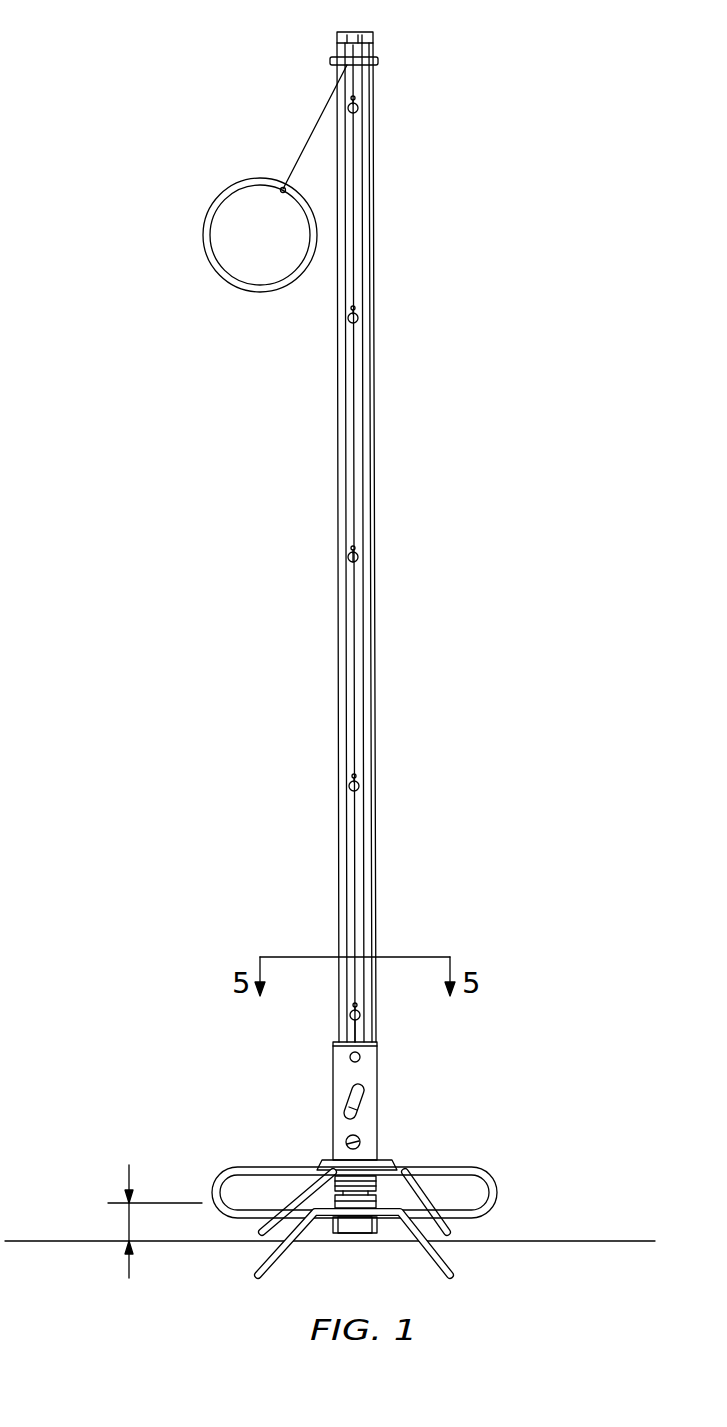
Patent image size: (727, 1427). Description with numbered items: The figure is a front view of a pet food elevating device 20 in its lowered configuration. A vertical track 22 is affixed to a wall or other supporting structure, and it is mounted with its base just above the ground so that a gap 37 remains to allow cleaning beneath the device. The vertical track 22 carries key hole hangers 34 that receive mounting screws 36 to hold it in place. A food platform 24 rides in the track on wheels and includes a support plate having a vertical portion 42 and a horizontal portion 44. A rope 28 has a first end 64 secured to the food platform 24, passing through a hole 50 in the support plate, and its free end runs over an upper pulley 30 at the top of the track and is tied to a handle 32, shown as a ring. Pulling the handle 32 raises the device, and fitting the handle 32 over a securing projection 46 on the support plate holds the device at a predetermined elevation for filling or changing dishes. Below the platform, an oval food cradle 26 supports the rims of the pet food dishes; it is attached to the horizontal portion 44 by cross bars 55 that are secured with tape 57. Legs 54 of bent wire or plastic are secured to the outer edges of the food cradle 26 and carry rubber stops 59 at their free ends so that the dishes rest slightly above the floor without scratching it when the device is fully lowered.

The pet food elevating device 20 is at (166, 921).
The vertical track 22 is at (362, 411).
The food platform 24 is at (370, 1079).
The food cradle 26 is at (470, 1170).
The rope 28 is at (362, 219).
The upper pulley 30 is at (352, 36).
The handle 32 is at (210, 204).
The key hole hanger 34 is at (356, 561).
The mounting screw 36 is at (356, 553).
The gap 37 is at (129, 1220).
The vertical portion 42 is at (370, 1128).
The horizontal portion 44 is at (355, 1234).
The securing projection 46 is at (352, 1089).
The hole 50 is at (360, 1057).
The legs 54 is at (437, 1255).
The cross bars 55 is at (338, 1182).
The tape 57 is at (380, 1191).
The rubber stops 59 is at (255, 1278).
The first end 64 is at (355, 1034).